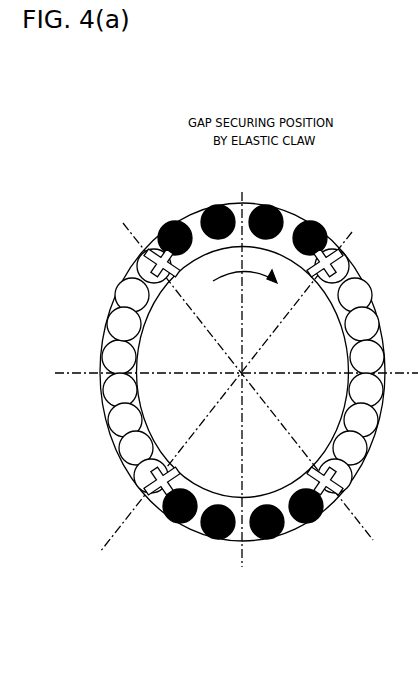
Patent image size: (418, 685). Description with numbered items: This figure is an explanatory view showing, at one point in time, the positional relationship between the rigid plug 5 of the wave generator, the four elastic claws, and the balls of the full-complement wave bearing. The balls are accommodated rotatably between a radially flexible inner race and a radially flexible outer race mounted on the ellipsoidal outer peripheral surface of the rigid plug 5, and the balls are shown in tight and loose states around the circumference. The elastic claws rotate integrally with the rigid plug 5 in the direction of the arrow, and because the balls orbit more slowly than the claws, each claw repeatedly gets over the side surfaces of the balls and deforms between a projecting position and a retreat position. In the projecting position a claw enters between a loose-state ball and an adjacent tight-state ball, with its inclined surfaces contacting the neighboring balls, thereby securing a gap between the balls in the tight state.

The rigid plug 5 is at (308, 338).